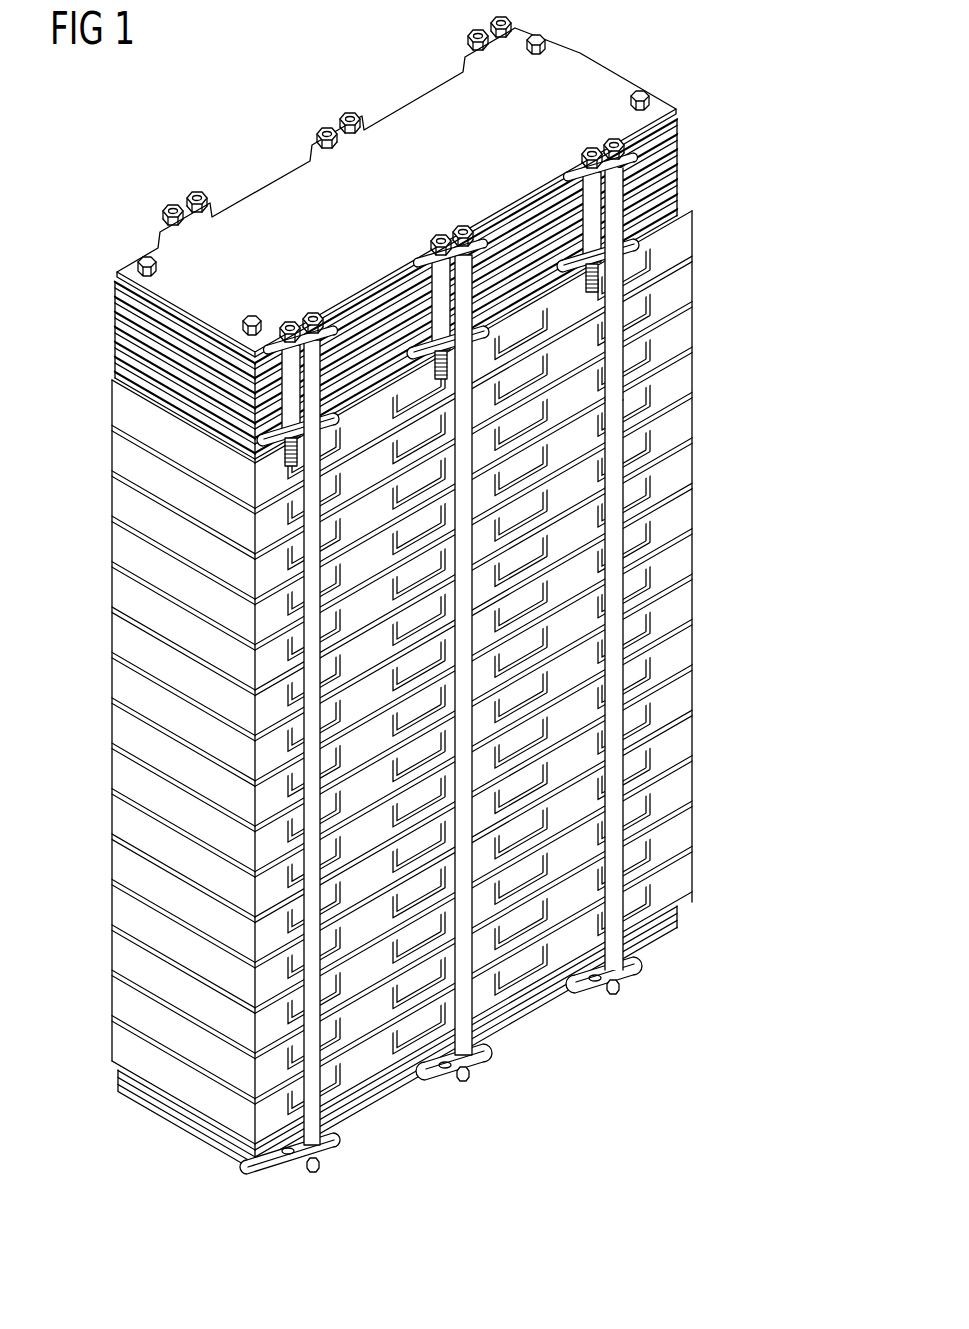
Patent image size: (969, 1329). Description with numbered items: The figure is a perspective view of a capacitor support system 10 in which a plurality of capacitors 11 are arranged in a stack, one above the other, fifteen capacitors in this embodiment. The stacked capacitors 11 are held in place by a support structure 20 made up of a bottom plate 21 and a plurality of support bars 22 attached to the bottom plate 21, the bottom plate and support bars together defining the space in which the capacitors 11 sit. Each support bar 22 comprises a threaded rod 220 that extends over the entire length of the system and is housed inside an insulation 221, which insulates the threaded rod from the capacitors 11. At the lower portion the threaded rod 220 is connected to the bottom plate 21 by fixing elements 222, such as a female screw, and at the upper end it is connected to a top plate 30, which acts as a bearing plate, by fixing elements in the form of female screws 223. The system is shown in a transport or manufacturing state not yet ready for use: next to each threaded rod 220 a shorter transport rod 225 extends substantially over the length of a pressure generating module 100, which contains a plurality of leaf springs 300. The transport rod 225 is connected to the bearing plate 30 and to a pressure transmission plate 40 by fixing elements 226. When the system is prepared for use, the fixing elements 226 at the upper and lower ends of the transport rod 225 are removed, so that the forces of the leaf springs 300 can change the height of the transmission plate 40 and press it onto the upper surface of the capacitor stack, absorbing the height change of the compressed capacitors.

The pressure generating module 100 is at (433, 615).
The capacitor support system 10 is at (437, 691).
The capacitors 11 is at (118, 1048).
The support structure 20 is at (247, 1167).
The bottom plate 21 is at (380, 1097).
The support bars 22 is at (312, 1052).
The threaded rod 220 is at (617, 192).
The insulation 221 is at (616, 371).
The fixing elements 222 is at (322, 1166).
The female screws 223 is at (366, 121).
The transport rod 225 is at (590, 205).
The fixing elements 226 is at (304, 314).
The top plate 30 is at (280, 190).
The pressure transmission plate 40 is at (272, 440).
The leaf springs 300 is at (133, 338).